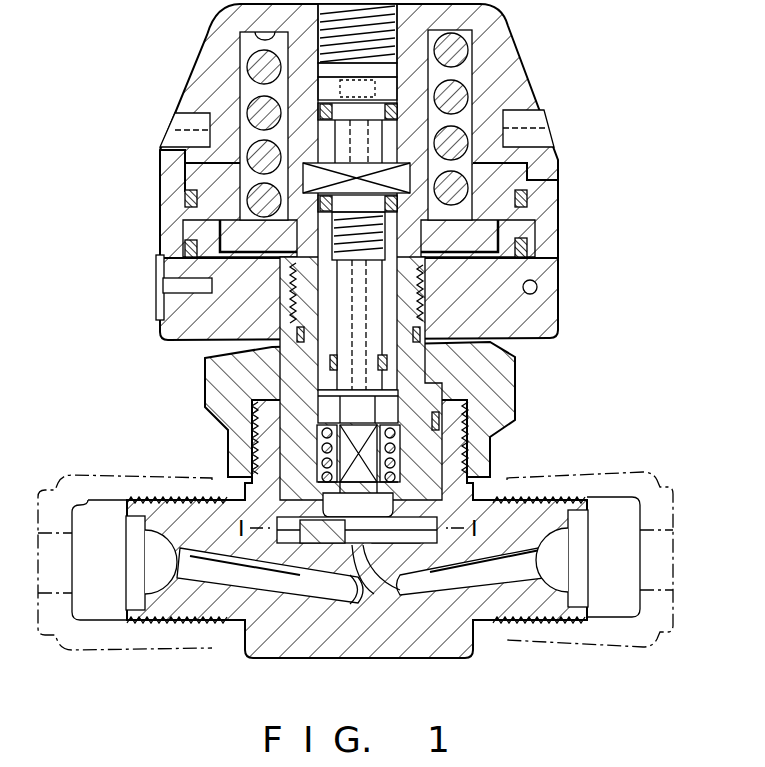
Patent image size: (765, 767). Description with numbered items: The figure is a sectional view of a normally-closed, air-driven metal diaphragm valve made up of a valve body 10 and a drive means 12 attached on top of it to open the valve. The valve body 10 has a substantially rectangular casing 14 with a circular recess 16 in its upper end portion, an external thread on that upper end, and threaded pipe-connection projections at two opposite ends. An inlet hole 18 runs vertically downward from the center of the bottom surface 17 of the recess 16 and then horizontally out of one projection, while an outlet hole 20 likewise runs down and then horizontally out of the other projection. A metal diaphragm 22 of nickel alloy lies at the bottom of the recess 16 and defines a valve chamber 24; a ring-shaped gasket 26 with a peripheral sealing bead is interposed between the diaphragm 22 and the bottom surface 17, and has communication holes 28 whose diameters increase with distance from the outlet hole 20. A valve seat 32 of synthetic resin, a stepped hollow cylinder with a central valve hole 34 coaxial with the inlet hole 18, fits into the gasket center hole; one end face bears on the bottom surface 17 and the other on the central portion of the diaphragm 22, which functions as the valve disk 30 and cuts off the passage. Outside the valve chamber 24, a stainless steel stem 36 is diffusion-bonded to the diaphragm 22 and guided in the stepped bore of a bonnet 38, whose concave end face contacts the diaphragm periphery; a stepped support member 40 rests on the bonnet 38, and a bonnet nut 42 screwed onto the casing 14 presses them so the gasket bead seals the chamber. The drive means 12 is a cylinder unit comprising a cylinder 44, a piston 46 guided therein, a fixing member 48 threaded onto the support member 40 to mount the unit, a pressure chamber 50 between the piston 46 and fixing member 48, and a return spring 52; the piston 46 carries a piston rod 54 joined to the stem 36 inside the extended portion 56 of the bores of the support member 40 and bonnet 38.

The valve body 10 is at (562, 669).
The drive means 12 is at (570, 125).
The casing 14 is at (245, 483).
The circular recess 16 is at (470, 455).
The bottom surface 17 is at (313, 543).
The inlet hole 18 is at (357, 595).
The outlet hole 20 is at (458, 582).
The metal diaphragm 22 is at (482, 487).
The valve chamber 24 is at (300, 552).
The gasket 26 is at (246, 640).
The communication holes 28 is at (420, 550).
The valve disk 30 is at (375, 550).
The valve seat 32 is at (385, 548).
The valve hole 34 is at (365, 548).
The stem 36 is at (323, 498).
The bonnet 38 is at (320, 440).
The support member 40 is at (180, 318).
The bonnet nut 42 is at (518, 372).
The cylinder 44 is at (550, 233).
The piston 46 is at (515, 200).
The fixing member 48 is at (543, 323).
The pressure chamber 50 is at (197, 258).
The return spring 52 is at (473, 32).
The piston rod 54 is at (340, 345).
The extended portion 56 is at (240, 403).